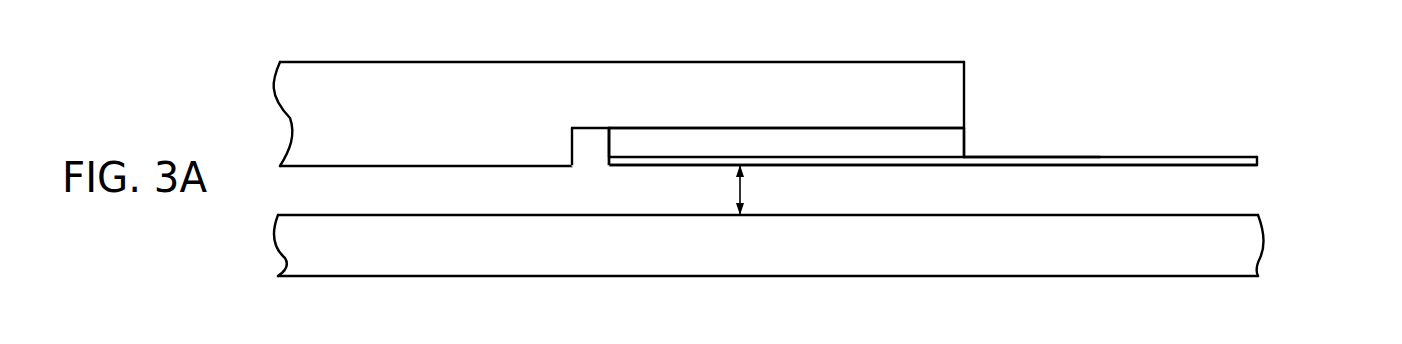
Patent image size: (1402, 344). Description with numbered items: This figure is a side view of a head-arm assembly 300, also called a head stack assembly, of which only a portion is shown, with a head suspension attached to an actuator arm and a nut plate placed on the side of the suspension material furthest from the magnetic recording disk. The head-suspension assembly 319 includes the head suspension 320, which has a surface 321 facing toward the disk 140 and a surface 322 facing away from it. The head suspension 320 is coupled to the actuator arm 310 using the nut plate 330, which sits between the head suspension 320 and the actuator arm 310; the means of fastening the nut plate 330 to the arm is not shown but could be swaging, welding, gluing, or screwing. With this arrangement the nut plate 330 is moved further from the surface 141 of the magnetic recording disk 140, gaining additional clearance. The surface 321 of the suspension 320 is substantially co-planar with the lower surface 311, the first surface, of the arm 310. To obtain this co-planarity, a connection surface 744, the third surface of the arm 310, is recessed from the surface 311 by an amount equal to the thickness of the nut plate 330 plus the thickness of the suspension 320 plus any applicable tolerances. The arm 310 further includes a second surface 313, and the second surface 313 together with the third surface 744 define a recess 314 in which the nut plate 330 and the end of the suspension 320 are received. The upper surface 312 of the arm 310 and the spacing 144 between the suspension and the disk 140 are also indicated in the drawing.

The head-arm assembly 300 is at (1292, 59).
The actuator arm 310 is at (498, 122).
The lower surface of arm 311 is at (383, 167).
The top surface of slider 312 is at (389, 61).
The second surface 313 is at (573, 157).
The recess 314 is at (617, 129).
The head-suspension assembly 319 is at (1107, 143).
The head suspension 320 is at (928, 107).
The surface facing towards disk 321 is at (1015, 167).
The surface facing away 322 is at (1030, 156).
The nut plate 330 is at (953, 139).
The connection surface 744 is at (592, 130).
The fly height 144 is at (744, 190).
The magnetic recording disk 140 is at (1070, 252).
The surface of magnetic recording disk 141 is at (1141, 213).